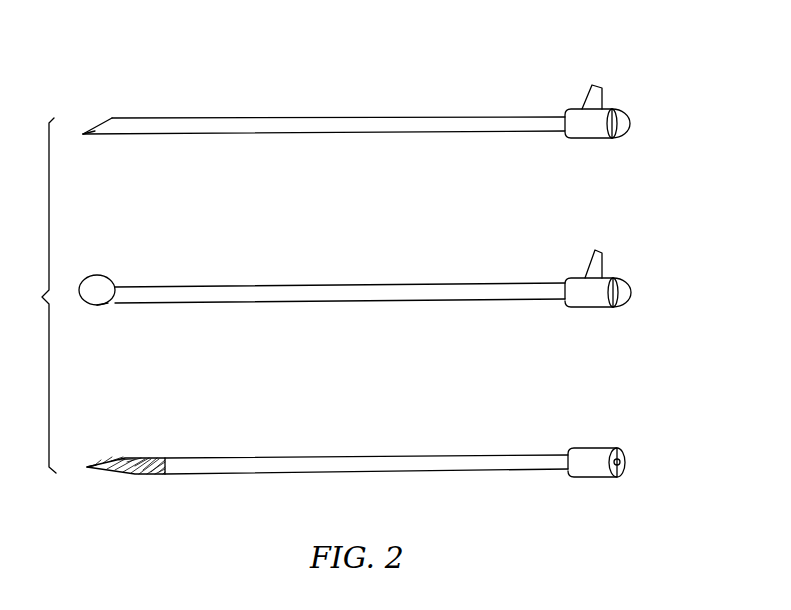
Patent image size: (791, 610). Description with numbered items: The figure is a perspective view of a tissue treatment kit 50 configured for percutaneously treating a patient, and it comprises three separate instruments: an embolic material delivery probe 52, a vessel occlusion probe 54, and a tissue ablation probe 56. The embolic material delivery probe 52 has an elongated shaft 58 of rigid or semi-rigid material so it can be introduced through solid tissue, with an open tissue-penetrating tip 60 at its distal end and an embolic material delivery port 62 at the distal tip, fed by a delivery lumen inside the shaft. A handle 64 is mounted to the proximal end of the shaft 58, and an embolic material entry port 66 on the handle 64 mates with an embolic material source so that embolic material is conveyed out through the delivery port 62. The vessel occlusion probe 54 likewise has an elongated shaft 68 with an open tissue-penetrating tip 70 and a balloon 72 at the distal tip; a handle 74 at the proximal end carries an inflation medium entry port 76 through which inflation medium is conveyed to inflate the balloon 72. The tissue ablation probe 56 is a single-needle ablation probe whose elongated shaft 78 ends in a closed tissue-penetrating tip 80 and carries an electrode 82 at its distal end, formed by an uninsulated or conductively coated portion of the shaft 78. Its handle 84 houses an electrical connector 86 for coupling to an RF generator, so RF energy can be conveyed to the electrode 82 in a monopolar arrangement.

The tissue treatment kit 50 is at (664, 208).
The embolic material delivery probe 52 is at (356, 104).
The vessel occlusion probe 54 is at (355, 273).
The tissue ablation probe 56 is at (372, 445).
The elongated shaft 58 is at (262, 118).
The open tissue-penetrating tip 60 is at (100, 136).
The embolic material delivery port 62 is at (107, 124).
The handle 64 is at (594, 130).
The embolic material entry port 66 is at (586, 98).
The elongated shaft 68 is at (262, 287).
The open tissue-penetrating tip 70 is at (100, 304).
The balloon 72 is at (98, 282).
The handle 74 is at (594, 300).
The inflation medium entry port 76 is at (587, 266).
The elongated shaft 78 is at (262, 458).
The closed tissue-penetrating tip 80 is at (102, 471).
The electrode 82 is at (150, 458).
The handle 84 is at (596, 470).
The electrical connector 86 is at (623, 460).